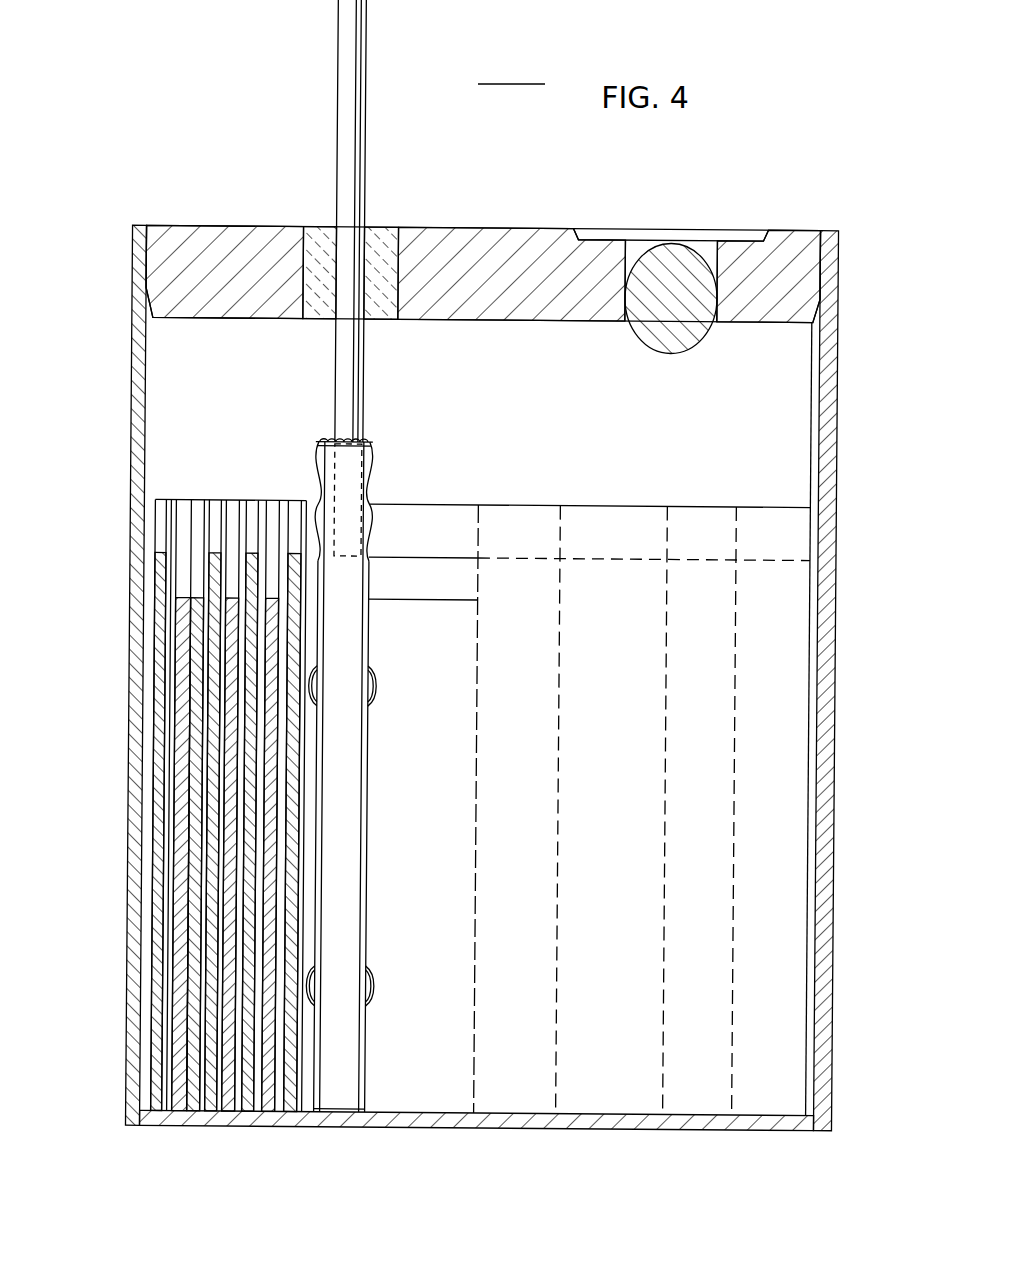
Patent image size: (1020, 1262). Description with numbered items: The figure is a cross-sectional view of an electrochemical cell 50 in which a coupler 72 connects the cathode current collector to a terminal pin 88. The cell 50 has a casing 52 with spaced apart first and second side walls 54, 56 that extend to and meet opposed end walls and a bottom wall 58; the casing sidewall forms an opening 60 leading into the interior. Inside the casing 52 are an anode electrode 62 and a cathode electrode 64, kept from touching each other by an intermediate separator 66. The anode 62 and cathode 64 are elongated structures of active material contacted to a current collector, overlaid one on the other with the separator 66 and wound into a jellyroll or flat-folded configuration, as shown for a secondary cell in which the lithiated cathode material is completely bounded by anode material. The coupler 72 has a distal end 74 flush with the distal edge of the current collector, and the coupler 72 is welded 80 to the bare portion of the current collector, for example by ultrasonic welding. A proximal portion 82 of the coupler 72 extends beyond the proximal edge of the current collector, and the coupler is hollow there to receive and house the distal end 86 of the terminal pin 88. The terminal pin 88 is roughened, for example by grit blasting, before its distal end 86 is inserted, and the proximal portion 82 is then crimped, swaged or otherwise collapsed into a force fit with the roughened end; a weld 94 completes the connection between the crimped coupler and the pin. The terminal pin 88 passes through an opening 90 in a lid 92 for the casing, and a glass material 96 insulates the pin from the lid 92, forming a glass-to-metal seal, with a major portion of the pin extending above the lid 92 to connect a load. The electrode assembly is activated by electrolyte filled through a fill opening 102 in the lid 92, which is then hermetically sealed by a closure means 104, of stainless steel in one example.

The electrochemical cell 50 is at (813, 118).
The casing 52 is at (836, 362).
The first side wall 54 is at (836, 470).
The second side wall 56 is at (130, 402).
The bottom wall 58 is at (755, 1130).
The opening 60 is at (820, 230).
The anode electrode 62 is at (185, 505).
The cathode electrode 64 is at (162, 594).
The separator 66 is at (228, 505).
The coupler 72 is at (369, 800).
The distal end of the coupler 74 is at (340, 1097).
The weld 80 is at (377, 681).
The proximal portion of the coupler 82 is at (372, 522).
The distal end of the terminal pin 86 is at (374, 465).
The terminal pin 88 is at (362, 44).
The opening in the lid 90 is at (392, 229).
The lid 92 is at (488, 229).
The weld 94 is at (370, 442).
The glass material 96 is at (314, 229).
The fill opening 102 is at (716, 232).
The closure means 104 is at (660, 258).